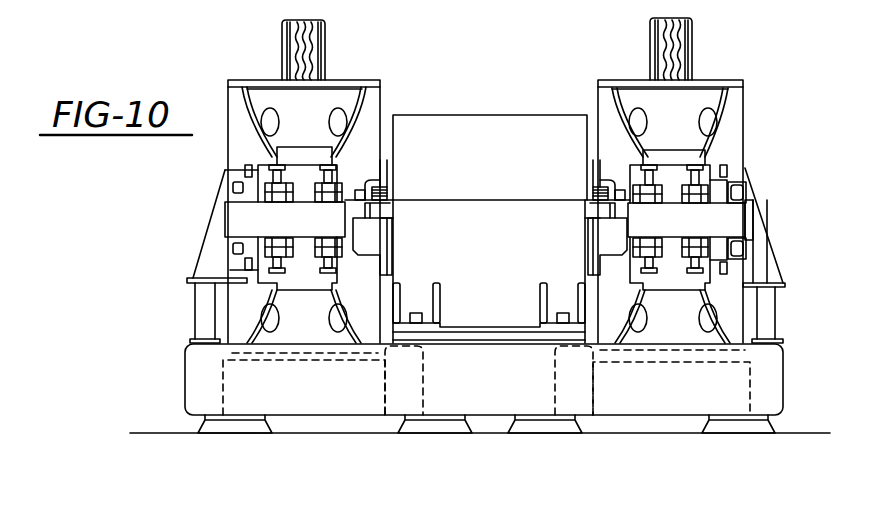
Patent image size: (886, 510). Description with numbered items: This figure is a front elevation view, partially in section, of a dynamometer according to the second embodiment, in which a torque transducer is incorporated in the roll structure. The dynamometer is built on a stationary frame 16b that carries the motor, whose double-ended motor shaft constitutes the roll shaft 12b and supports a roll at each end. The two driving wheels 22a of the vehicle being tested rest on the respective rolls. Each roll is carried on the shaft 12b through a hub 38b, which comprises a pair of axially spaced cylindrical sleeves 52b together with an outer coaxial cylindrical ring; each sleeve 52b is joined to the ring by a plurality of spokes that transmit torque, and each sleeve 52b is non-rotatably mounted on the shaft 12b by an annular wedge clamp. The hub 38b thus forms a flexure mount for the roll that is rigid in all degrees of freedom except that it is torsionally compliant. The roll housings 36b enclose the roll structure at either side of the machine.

The roll housing 36b is at (248, 80).
The driving wheels 22a is at (327, 62).
The cylindrical sleeves 52b is at (677, 163).
The hub 38b is at (600, 143).
The roll shaft 12b is at (745, 232).
The stationary frame 16b is at (187, 383).